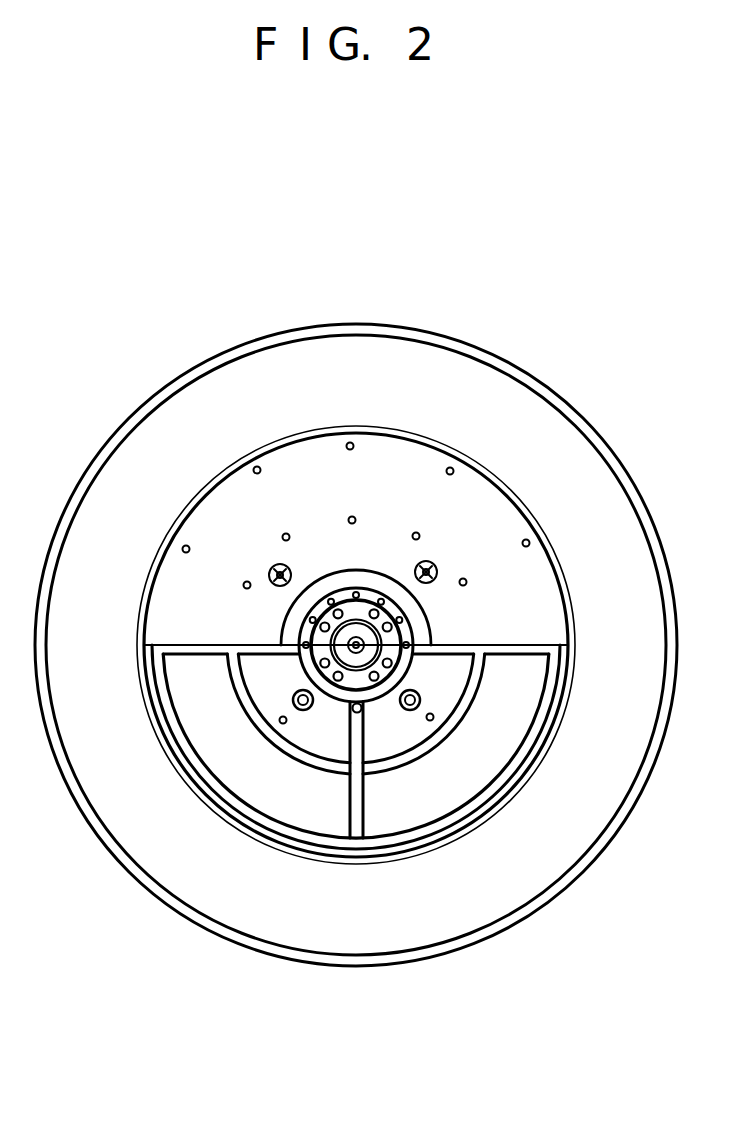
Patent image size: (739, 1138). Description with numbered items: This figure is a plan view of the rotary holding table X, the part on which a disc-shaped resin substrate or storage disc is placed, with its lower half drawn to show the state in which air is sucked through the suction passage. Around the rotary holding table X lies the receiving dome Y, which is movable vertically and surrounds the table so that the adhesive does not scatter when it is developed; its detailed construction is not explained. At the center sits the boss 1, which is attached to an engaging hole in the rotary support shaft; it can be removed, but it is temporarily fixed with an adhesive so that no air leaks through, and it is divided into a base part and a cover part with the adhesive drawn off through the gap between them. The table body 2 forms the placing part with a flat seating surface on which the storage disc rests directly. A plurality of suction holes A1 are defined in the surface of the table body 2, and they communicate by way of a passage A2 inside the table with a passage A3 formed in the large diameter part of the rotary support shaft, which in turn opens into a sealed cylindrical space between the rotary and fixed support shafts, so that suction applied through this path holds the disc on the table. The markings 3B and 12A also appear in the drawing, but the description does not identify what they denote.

The boss 1 is at (347, 305).
The table body 2 is at (476, 551).
The section line 3B- 3B is at (355, 560).
The hub ring 12A is at (397, 633).
The suction holes A1 is at (190, 549).
The passage inside the table A2 is at (250, 712).
The passage of the large diameter part A3 is at (362, 709).
The rotary holding table X is at (532, 596).
The receiving dome Y is at (112, 807).